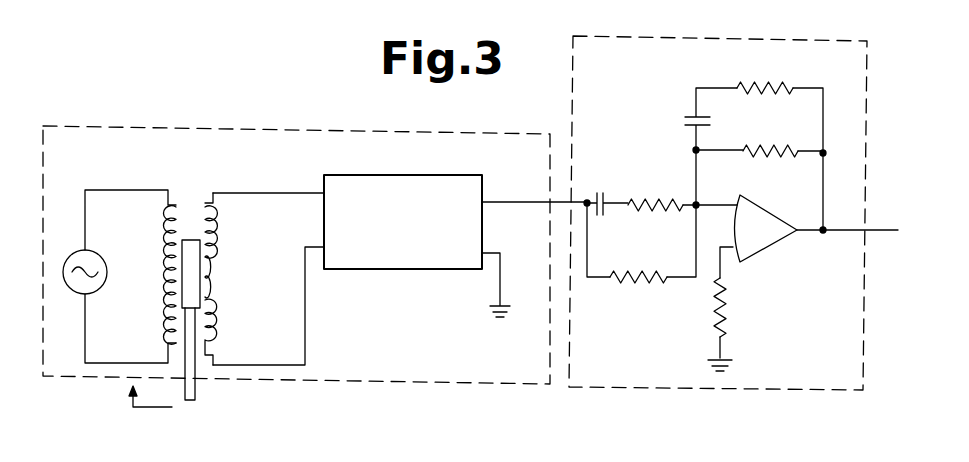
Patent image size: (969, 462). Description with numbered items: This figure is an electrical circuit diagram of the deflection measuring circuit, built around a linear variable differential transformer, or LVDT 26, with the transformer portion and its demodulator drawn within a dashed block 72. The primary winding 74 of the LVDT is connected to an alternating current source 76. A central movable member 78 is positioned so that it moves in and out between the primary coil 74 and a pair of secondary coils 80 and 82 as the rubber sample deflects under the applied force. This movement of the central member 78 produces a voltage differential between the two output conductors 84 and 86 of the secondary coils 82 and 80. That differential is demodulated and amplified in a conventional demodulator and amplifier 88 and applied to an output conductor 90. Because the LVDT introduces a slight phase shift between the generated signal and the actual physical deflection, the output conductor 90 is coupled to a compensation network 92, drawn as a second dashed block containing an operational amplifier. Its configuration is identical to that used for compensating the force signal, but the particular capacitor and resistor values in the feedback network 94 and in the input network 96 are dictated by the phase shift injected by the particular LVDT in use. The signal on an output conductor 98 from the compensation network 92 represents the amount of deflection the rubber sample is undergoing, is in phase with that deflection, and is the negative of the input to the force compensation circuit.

The primary circuit of transformer sensor 26 is at (128, 185).
The sensor circuit block 72 is at (203, 129).
The primary winding 74 is at (165, 222).
The alternating current source 76 is at (73, 254).
The central movable member 78 is at (195, 277).
The secondary coil 80 is at (218, 318).
The secondary coil 82 is at (221, 232).
The output conductor 84 is at (283, 192).
The output conductor 86 is at (303, 341).
The demodulator and amplifier 88 is at (448, 267).
The output conductor 90 is at (538, 205).
The compensation network 92 is at (683, 47).
The feedback network 94 is at (806, 80).
The input network 96 is at (648, 296).
The output conductor 98 is at (851, 235).